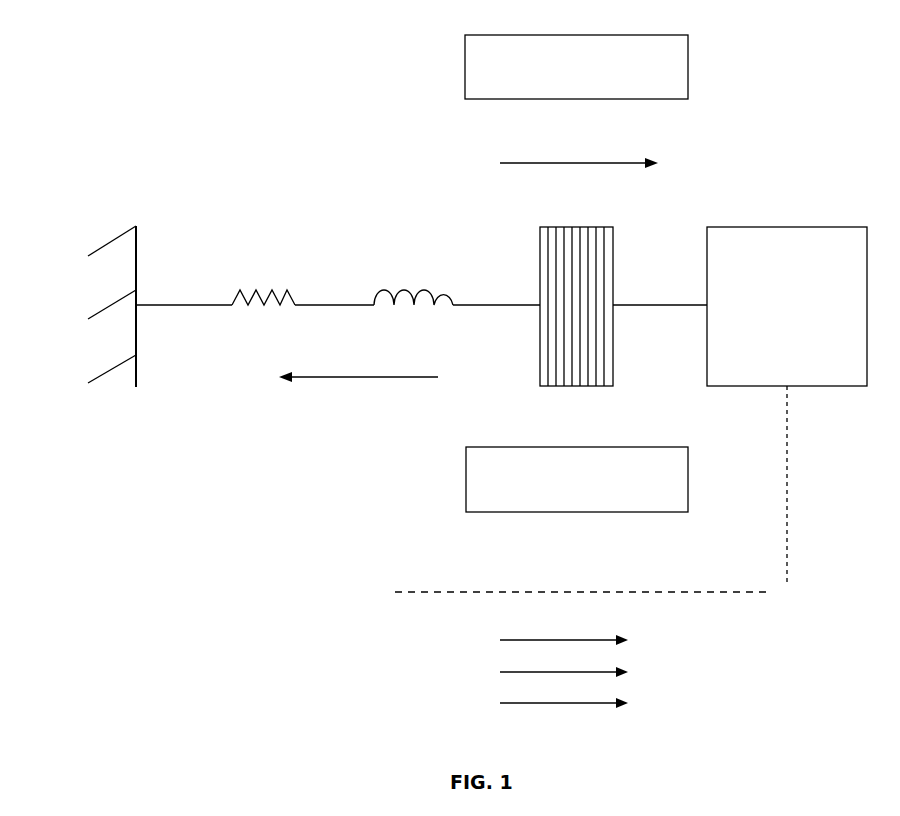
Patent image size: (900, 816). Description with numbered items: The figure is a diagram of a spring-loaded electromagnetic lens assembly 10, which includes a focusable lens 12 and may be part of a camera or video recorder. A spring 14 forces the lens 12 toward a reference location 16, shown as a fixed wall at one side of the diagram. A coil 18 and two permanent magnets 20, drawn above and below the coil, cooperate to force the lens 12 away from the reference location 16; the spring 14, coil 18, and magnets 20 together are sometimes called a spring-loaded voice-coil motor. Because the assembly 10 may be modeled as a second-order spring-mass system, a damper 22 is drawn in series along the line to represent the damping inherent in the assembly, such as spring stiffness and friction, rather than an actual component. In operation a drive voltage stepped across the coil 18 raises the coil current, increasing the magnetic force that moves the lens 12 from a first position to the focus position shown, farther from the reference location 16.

The spring-loaded electromagnetic lens assembly 10 is at (146, 614).
The focusable lens 12 is at (797, 326).
The spring 14 is at (397, 291).
The reference location 16 is at (139, 243).
The coil 18 is at (598, 227).
The permanent magnet 20 is at (670, 35).
The damper 22 is at (257, 291).